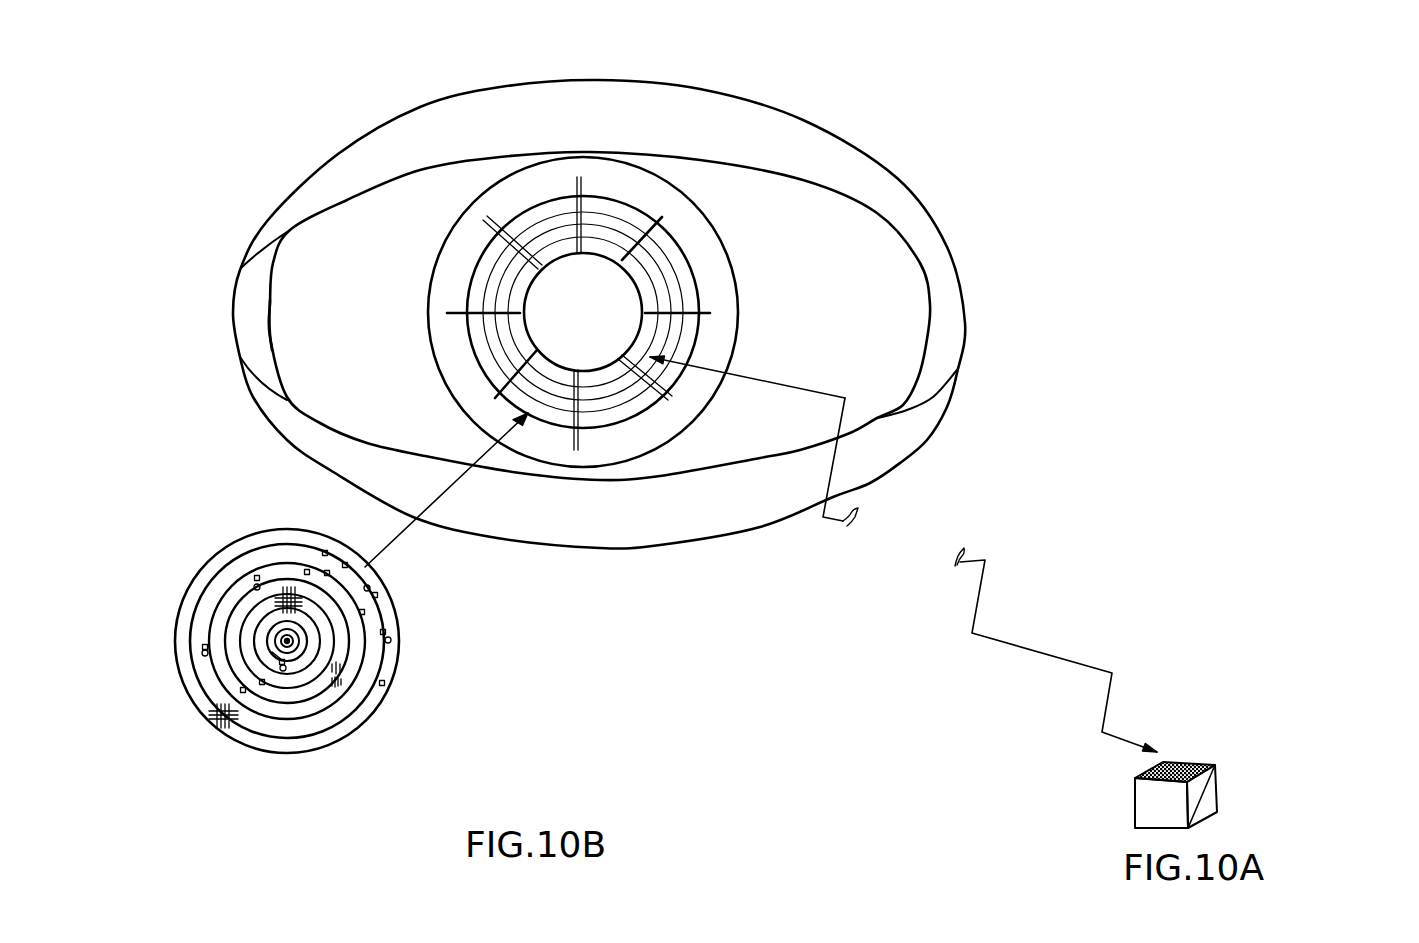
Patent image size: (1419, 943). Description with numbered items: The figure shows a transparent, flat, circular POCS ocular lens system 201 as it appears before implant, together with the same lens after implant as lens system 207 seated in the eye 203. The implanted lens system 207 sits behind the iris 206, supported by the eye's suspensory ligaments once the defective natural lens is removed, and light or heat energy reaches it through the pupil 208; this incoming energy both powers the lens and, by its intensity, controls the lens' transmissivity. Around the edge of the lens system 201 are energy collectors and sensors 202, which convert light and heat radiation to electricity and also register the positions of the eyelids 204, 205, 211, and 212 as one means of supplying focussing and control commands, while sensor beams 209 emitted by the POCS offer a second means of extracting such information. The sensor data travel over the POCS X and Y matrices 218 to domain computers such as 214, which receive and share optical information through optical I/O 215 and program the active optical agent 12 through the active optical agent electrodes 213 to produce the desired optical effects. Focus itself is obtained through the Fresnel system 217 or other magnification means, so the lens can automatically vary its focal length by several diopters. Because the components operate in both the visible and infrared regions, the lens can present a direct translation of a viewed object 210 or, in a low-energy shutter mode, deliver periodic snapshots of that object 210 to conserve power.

In FIG. 10B, the POCS ocular lens system 201 is at (262, 532).
In FIG. 10B, the energy collectors and sensors 202 is at (326, 548).
In FIG. 10B, the eye 203 is at (270, 305).
In FIG. 10B, the eyelid 204 is at (338, 157).
In FIG. 10B, the eyelid 205 is at (413, 177).
In FIG. 10B, the iris 206 is at (508, 182).
In FIG. 10B, the lens system after implant 207 is at (598, 196).
In FIG. 10B, the pupil 208 is at (600, 247).
In FIG. 10A, the sensor beams 209 is at (972, 633).
In FIG. 10A, the viewed object 210 is at (1199, 766).
In FIG. 10B, the eyelid 211 is at (615, 472).
In FIG. 10B, the eyelid 212 is at (563, 540).
In FIG. 10B, the active optical agent electrodes 213 is at (368, 585).
In FIG. 10B, the domain computer 214 is at (390, 642).
In FIG. 10B, the optical I/O 215 is at (390, 648).
In FIG. 10B, the active optical agent 12 is at (334, 688).
In FIG. 10B, the Fresnel system 217 is at (281, 697).
In FIG. 10B, the POCS X and Y matrices 218 is at (223, 725).